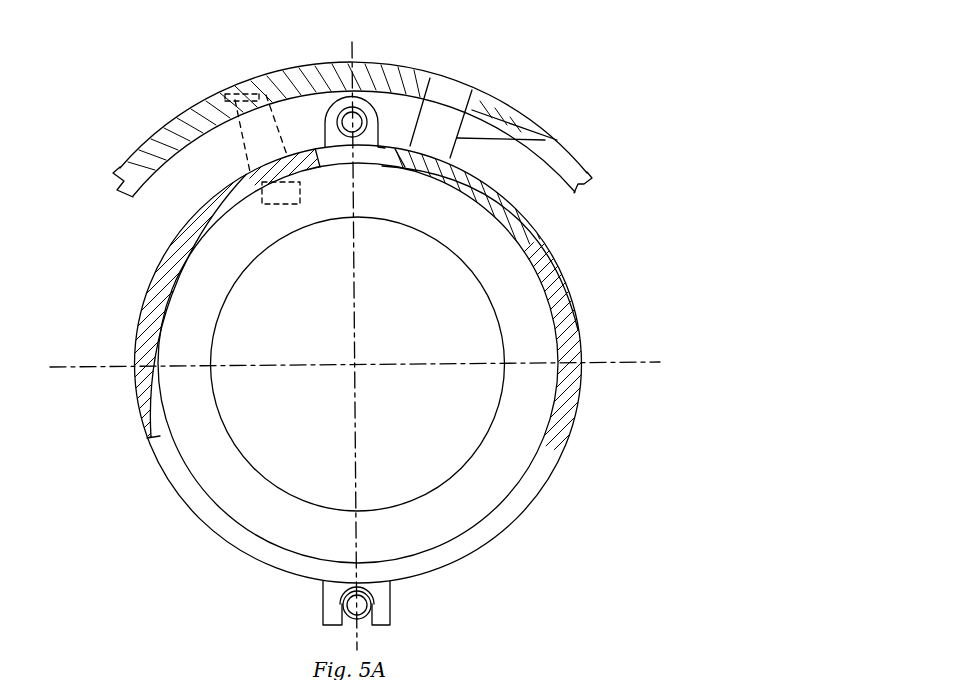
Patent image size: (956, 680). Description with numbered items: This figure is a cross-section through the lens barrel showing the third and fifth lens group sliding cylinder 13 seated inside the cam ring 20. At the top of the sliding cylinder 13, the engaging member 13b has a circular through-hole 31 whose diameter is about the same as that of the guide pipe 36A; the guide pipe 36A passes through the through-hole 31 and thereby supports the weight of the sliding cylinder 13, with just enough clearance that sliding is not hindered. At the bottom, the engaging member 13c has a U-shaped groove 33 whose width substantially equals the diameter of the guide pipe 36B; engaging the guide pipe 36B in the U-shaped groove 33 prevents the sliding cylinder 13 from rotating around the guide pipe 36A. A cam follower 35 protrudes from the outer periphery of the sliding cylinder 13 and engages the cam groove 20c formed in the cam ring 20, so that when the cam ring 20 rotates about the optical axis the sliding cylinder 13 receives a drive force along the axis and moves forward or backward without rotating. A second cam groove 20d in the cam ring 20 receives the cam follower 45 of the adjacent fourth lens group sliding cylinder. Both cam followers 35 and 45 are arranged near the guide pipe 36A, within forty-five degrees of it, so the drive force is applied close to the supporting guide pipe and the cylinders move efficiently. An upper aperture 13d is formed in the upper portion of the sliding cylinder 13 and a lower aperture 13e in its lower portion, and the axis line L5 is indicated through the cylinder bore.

The third and fifth lens group sliding cylinder 13 is at (129, 320).
The engaging member 13b is at (382, 121).
The engaging member 13c is at (390, 604).
The upper aperture 13d is at (490, 190).
The lower aperture 13e is at (567, 443).
The cam ring 20 is at (118, 173).
The cam groove 20c is at (441, 78).
The cam groove 20d is at (232, 97).
The through-hole 31 is at (366, 118).
The U-shaped groove 33 is at (363, 624).
The cam follower 35 is at (545, 140).
The guide pipe 36A is at (330, 104).
The guide pipe 36B is at (342, 604).
The cam follower 45 is at (243, 148).
The bore axis line L5 is at (463, 323).